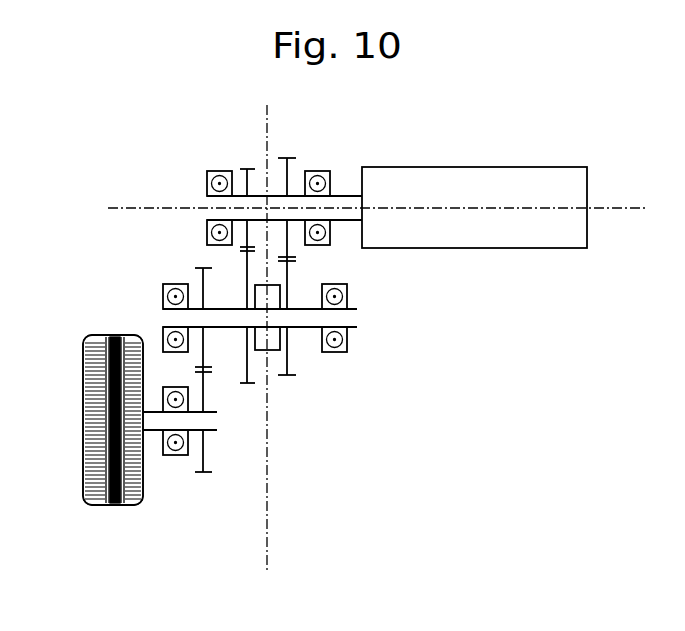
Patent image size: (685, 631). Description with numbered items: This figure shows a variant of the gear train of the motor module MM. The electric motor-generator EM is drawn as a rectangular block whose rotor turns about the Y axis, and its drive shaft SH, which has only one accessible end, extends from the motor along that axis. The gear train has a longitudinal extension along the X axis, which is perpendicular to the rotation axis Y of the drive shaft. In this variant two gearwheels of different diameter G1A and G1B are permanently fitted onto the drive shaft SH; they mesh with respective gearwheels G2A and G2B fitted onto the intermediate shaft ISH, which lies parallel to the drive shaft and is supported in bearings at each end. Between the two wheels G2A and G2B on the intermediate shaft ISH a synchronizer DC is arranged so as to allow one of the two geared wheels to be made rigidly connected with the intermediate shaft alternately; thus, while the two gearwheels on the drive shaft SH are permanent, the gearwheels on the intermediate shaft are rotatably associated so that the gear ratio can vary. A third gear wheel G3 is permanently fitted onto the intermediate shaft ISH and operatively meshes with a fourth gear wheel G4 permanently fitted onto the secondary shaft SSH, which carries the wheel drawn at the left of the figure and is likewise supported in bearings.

The motor module MM is at (120, 167).
The electric motor-generator EM is at (474, 207).
The drive shaft SH is at (340, 195).
The intermediate shaft ISH is at (337, 322).
The secondary shaft SSH is at (203, 421).
The synchronizer DC is at (273, 352).
The gearwheel G1A is at (287, 157).
The gearwheel G1B is at (247, 167).
The gearwheel G2A is at (292, 272).
The gearwheel G2B is at (246, 257).
The third gear wheel G3 is at (194, 269).
The fourth gear wheel G4 is at (197, 463).
The X axis X is at (265, 540).
The Y axis Y is at (658, 193).